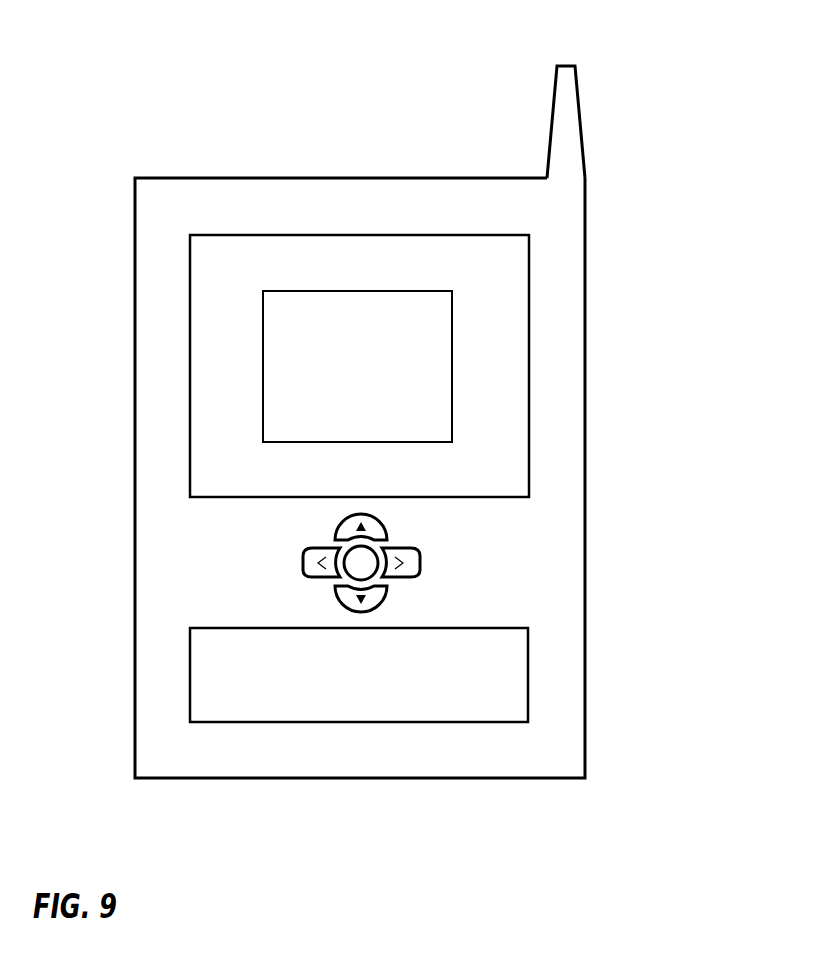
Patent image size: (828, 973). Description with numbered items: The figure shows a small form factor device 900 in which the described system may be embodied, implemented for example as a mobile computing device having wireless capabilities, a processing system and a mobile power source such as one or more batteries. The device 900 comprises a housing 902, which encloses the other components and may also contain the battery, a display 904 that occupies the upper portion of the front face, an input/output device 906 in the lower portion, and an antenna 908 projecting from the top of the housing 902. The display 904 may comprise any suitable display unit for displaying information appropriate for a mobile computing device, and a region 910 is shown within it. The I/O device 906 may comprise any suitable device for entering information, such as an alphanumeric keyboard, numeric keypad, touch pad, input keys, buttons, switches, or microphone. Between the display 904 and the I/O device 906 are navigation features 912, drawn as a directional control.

The small form factor device 900 is at (143, 76).
The housing 902 is at (585, 478).
The display 904 is at (529, 254).
The input/output (I/O) device 906 is at (528, 667).
The antenna 908 is at (552, 114).
The display window / image region 910 is at (452, 385).
The navigation features 912 is at (447, 553).